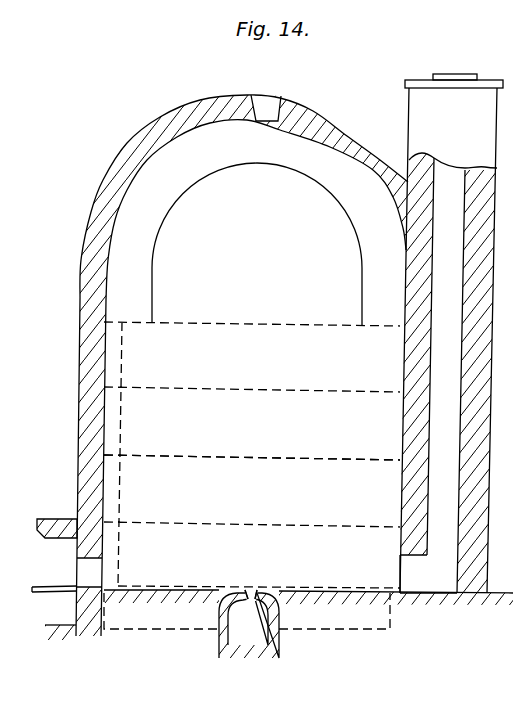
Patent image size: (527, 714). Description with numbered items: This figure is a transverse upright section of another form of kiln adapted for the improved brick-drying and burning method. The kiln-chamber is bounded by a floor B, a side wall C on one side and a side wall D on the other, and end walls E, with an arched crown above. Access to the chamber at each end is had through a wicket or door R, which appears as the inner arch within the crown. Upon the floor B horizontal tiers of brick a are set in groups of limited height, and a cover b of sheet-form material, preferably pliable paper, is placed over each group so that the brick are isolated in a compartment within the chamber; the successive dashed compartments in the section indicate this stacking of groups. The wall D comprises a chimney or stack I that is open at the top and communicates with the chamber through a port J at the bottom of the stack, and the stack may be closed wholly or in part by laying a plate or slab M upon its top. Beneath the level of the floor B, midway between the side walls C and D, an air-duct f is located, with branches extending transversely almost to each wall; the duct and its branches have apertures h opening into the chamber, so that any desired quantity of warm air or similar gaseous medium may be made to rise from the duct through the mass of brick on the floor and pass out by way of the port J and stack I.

The end wall E is at (255, 365).
The wicket or door R is at (257, 244).
The tiers of brick a is at (252, 455).
The side wall C is at (77, 459).
The side wall D is at (406, 483).
The chimney or stack I is at (448, 340).
The plate or slab M is at (454, 68).
The port J is at (428, 574).
The floor B is at (318, 590).
The apertures h is at (252, 590).
The air-duct f is at (139, 503).
The cover b is at (163, 632).